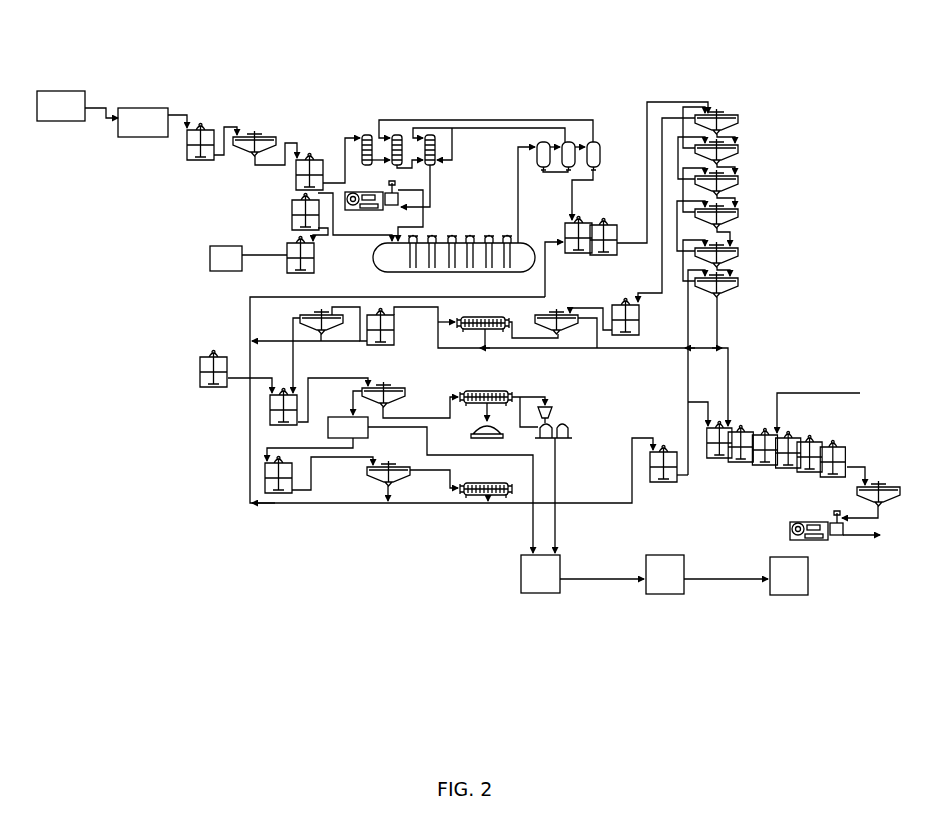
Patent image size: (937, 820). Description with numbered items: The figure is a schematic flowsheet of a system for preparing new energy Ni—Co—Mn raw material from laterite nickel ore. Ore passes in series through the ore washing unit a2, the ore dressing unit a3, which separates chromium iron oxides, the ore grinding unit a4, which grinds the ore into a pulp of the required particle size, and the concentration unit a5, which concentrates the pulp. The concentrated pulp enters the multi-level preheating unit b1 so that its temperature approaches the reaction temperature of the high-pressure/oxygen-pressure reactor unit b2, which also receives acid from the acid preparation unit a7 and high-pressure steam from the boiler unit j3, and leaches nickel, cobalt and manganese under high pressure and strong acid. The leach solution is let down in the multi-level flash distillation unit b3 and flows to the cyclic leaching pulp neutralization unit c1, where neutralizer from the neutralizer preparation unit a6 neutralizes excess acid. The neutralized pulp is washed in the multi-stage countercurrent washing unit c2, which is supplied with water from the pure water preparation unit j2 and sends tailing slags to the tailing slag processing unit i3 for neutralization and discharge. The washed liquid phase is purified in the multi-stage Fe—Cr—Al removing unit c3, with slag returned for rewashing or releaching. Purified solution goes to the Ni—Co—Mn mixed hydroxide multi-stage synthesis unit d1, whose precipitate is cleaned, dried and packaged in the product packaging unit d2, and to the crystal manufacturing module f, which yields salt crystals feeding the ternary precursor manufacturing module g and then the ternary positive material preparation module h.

The ore washing unit a2 is at (53, 105).
The ore dressing unit a3 is at (137, 118).
The ore grinding unit a4 is at (200, 135).
The concentration unit a5 is at (268, 147).
The neutralizer preparation unit a6 is at (220, 363).
The acid preparation unit a7 is at (302, 203).
The multi-level preheating unit b1 is at (397, 133).
The high-pressure/oxygen-pressure reactor unit b2 is at (457, 253).
The multi-level flash distillation unit b3 is at (568, 140).
The cyclic leaching pulp neutralization unit c1 is at (598, 222).
The multi-stage countercurrent washing unit c2 is at (728, 153).
The multi-stage Fe—Cr—Al removing unit c3 is at (622, 303).
The Ni—Co—Mn mixed hydroxide multi-stage synthesis unit d1 is at (272, 413).
The Ni—Co—Mn mixed hydroxide product packaging unit d2 is at (552, 407).
The crystal manufacturing module f is at (545, 565).
The ternary precursor manufacturing module g is at (660, 565).
The ternary positive material preparation module h is at (785, 565).
The tailing slag processing unit i3 is at (762, 430).
The pure water preparation unit j2 is at (222, 253).
The boiler unit j3 is at (300, 242).